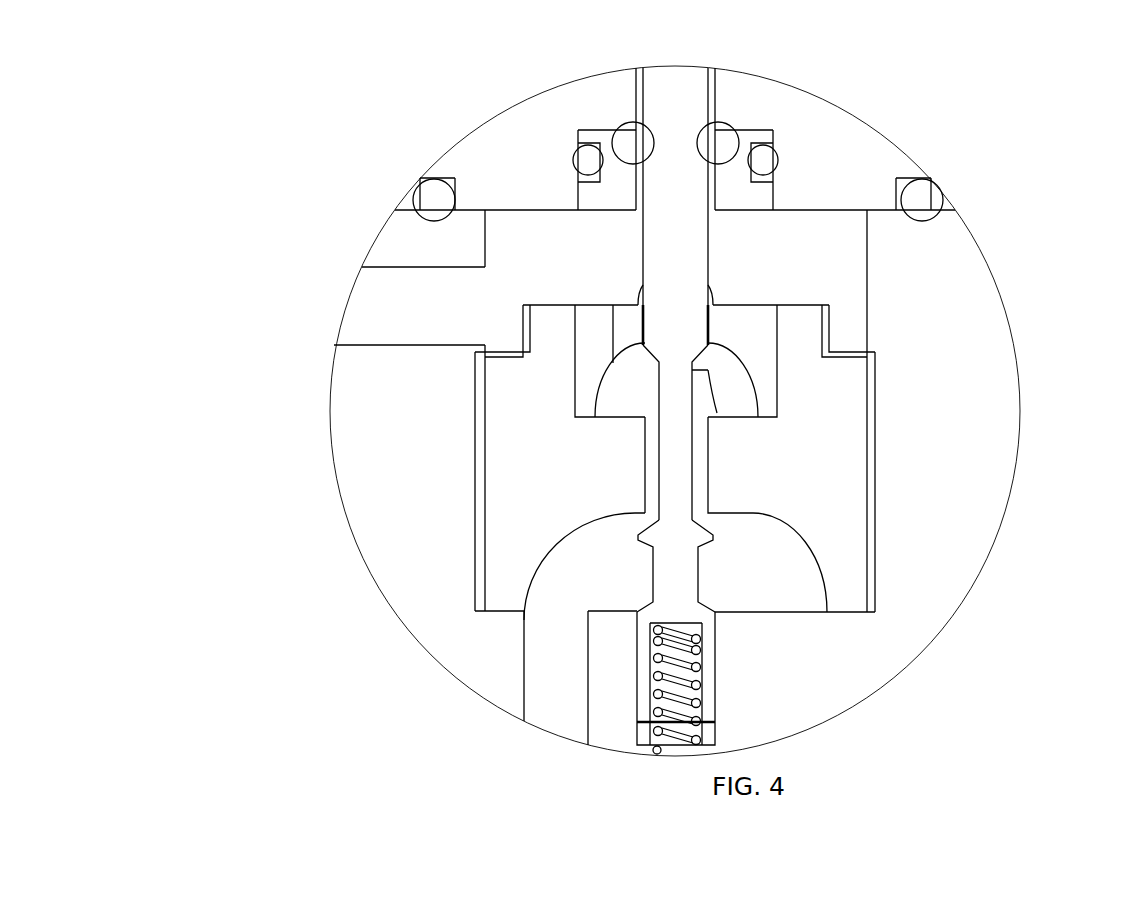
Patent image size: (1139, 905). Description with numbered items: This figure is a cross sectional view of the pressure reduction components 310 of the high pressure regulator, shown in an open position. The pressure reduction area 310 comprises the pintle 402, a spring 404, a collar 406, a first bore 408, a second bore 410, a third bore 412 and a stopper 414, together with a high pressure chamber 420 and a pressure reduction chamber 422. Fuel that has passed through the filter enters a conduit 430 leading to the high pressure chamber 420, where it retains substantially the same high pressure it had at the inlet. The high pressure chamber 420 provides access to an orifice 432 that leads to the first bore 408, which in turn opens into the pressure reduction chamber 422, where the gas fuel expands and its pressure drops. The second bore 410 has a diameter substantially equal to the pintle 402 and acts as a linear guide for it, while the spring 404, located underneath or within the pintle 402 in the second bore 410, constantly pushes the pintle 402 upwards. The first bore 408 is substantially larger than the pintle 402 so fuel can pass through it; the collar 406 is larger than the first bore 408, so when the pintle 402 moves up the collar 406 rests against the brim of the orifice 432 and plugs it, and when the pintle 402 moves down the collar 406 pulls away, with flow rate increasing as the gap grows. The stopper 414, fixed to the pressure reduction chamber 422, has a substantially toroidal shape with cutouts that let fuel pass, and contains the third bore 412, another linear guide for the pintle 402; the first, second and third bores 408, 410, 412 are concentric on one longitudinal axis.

The pressure reduction components 310 is at (353, 139).
The pintle 402 is at (677, 373).
The spring 404 is at (697, 687).
The collar 406 is at (697, 535).
The first bore 408 is at (710, 450).
The second bore 410 is at (722, 652).
The third bore 412 is at (712, 322).
The stopper 414 is at (732, 323).
The high pressure chamber 420 is at (548, 600).
The pressure reduction chamber 422 is at (602, 278).
The conduit 430 is at (538, 696).
The orifice 432 is at (652, 513).